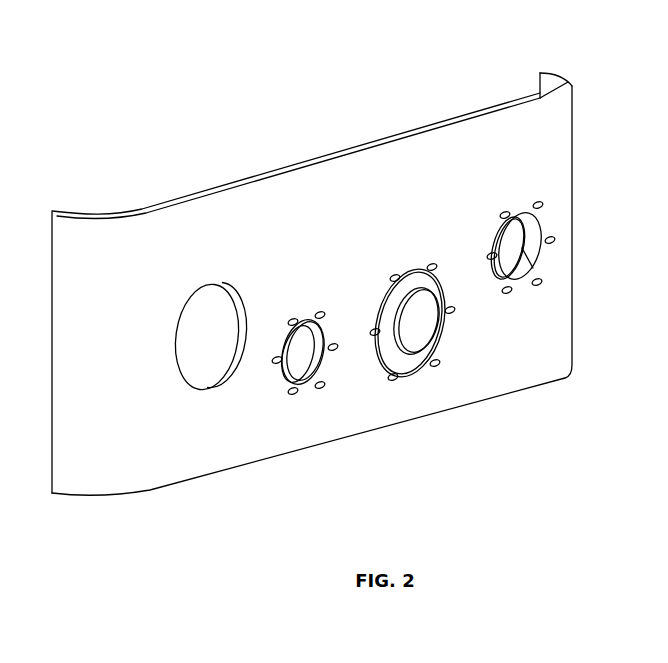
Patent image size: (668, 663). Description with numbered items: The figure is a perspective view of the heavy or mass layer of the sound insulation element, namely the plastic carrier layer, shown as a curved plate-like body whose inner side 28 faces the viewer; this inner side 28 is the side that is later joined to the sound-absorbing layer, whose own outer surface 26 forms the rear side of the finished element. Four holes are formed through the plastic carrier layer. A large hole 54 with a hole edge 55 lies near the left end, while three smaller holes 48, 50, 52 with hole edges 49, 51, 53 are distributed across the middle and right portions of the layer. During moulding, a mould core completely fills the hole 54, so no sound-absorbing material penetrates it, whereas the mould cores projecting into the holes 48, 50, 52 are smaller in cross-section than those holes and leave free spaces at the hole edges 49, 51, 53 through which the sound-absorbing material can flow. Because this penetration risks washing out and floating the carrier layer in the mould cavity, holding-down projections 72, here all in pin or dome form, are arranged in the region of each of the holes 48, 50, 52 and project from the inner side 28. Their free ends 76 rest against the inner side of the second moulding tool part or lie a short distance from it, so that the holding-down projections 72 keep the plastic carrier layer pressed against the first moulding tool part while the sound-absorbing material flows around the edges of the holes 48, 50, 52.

The outer surface 26 is at (348, 152).
The inner side 28 is at (536, 153).
The hole 48 is at (522, 248).
The hole edge 49 is at (523, 292).
The hole 50 is at (417, 327).
The hole edge 51 is at (457, 317).
The hole 52 is at (323, 357).
The hole edge 53 is at (324, 336).
The hole 54 is at (208, 333).
The hole edge 55 is at (250, 310).
The holding-down projections 72 is at (294, 320).
The free ends 76 is at (507, 253).